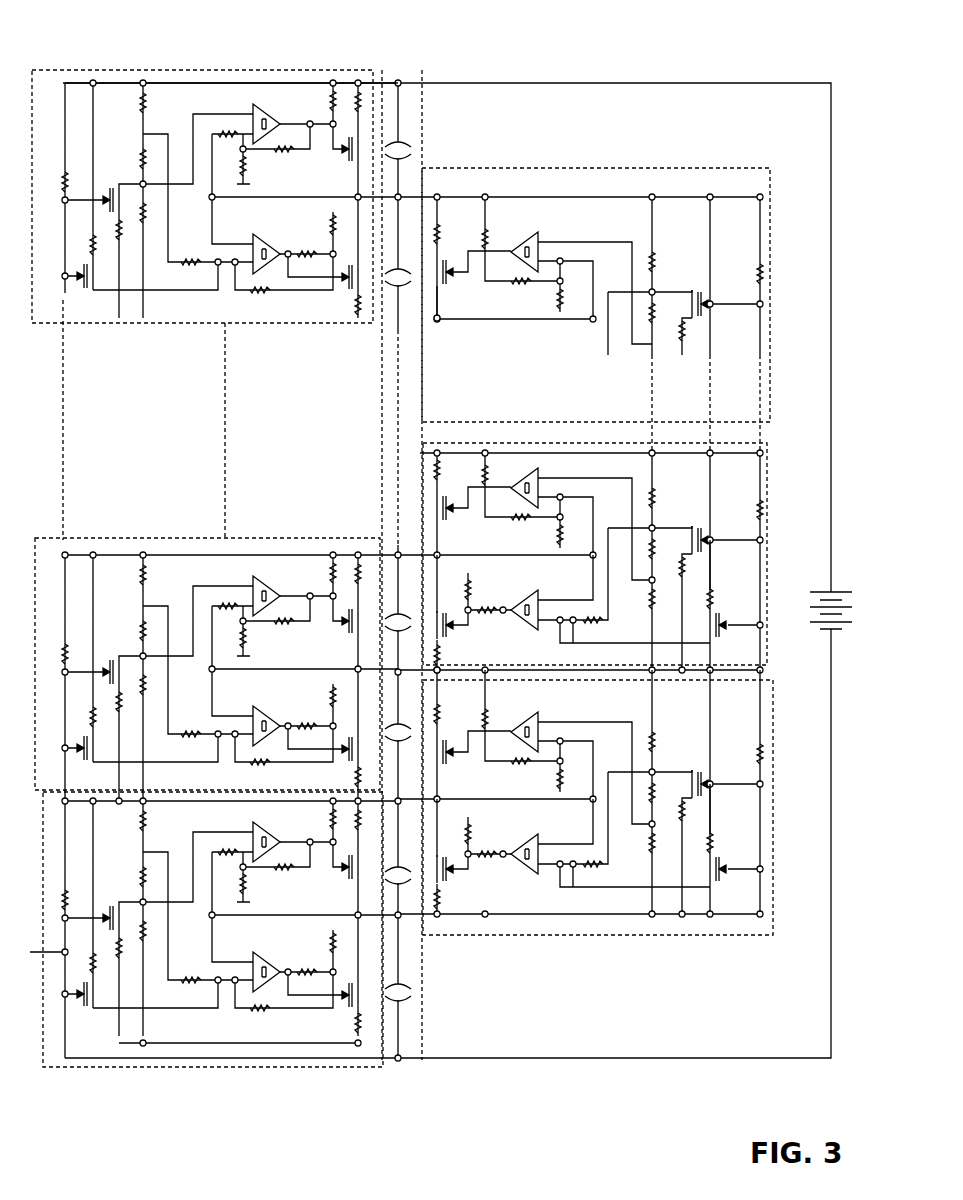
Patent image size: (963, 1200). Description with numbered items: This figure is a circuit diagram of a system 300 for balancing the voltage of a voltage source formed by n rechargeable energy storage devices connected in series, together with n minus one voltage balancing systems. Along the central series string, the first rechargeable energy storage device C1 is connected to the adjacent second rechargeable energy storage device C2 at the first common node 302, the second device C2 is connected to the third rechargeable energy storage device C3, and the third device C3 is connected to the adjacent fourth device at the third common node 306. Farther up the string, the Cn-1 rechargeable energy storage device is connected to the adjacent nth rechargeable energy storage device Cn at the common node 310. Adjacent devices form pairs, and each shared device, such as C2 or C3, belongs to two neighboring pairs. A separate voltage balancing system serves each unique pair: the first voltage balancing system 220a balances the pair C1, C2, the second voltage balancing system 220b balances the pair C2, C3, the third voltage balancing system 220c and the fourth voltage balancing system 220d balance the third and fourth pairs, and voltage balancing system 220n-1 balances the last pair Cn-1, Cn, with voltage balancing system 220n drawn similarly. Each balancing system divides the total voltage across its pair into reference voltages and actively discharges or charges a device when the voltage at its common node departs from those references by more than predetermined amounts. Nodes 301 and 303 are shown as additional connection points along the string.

The system for balancing voltage 300 is at (221, 58).
The voltage balancing system 220n is at (113, 325).
The voltage balancing system 220n-1 is at (575, 168).
The third voltage balancing system 220c is at (103, 538).
The fourth voltage balancing system 220d is at (423, 527).
The first voltage balancing system 220a is at (158, 1067).
The second voltage balancing system 220b is at (568, 937).
The connection node 301 is at (402, 797).
The first common node 302 is at (400, 920).
The connection node 303 is at (396, 552).
The third common node 306 is at (402, 676).
The common node 310 is at (405, 194).
The nth rechargeable energy storage device Cn is at (411, 153).
The rechargeable energy storage device Cn-1 is at (397, 289).
The third rechargeable energy storage device C3 is at (403, 636).
The second rechargeable energy storage device C2 is at (405, 804).
The first rechargeable energy storage device C1 is at (412, 995).